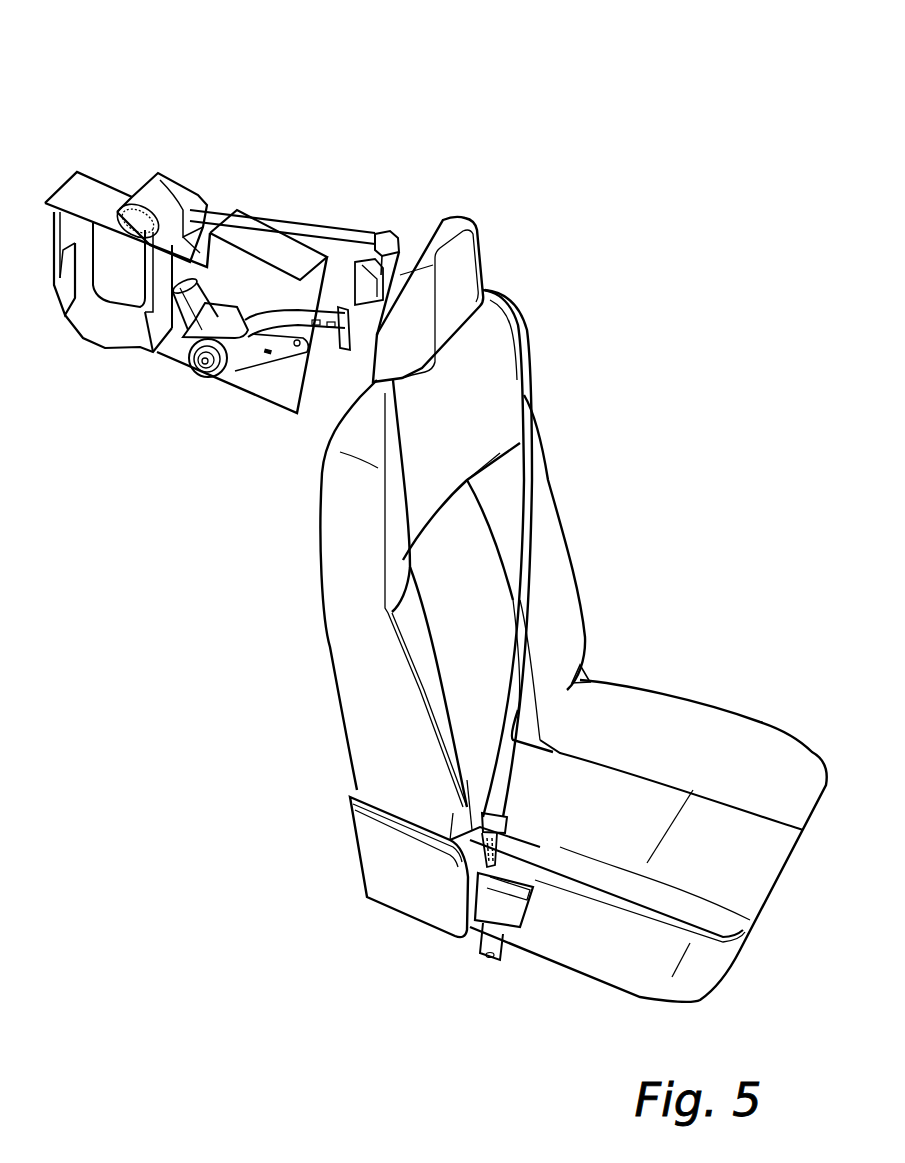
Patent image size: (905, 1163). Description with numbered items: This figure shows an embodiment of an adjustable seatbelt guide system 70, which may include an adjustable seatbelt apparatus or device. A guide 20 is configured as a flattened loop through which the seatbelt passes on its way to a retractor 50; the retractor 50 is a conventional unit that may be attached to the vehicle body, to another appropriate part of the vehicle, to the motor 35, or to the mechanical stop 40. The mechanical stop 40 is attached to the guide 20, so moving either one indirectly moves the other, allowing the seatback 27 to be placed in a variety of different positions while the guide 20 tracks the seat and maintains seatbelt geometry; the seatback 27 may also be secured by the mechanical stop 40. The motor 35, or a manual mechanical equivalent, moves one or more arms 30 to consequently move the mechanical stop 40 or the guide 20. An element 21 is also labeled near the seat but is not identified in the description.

The adjustable seatbelt guide system 70 is at (137, 102).
The retractor 50 is at (172, 192).
The mechanical stop 40 is at (360, 303).
The arm 30 is at (272, 328).
The motor 35 is at (198, 372).
The guide 20 is at (381, 231).
The seatback 27 is at (450, 220).
The seat belt 21 is at (532, 413).